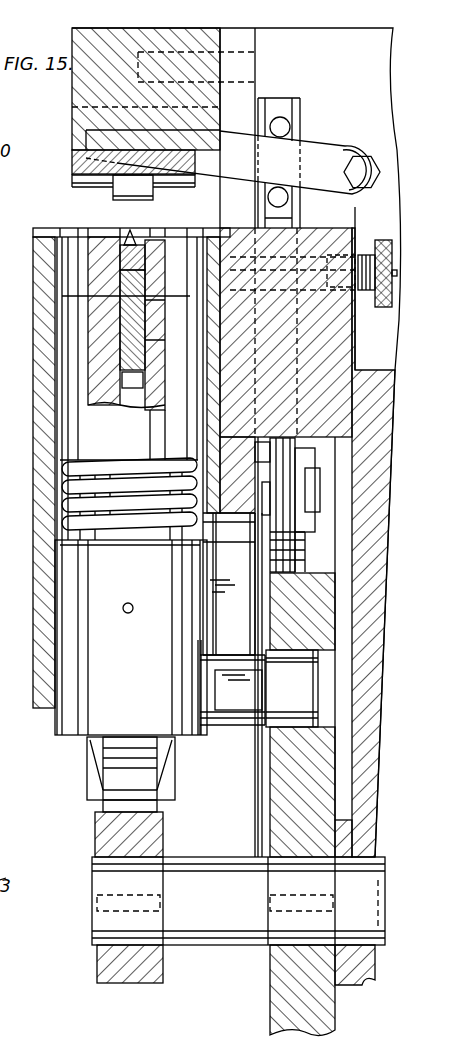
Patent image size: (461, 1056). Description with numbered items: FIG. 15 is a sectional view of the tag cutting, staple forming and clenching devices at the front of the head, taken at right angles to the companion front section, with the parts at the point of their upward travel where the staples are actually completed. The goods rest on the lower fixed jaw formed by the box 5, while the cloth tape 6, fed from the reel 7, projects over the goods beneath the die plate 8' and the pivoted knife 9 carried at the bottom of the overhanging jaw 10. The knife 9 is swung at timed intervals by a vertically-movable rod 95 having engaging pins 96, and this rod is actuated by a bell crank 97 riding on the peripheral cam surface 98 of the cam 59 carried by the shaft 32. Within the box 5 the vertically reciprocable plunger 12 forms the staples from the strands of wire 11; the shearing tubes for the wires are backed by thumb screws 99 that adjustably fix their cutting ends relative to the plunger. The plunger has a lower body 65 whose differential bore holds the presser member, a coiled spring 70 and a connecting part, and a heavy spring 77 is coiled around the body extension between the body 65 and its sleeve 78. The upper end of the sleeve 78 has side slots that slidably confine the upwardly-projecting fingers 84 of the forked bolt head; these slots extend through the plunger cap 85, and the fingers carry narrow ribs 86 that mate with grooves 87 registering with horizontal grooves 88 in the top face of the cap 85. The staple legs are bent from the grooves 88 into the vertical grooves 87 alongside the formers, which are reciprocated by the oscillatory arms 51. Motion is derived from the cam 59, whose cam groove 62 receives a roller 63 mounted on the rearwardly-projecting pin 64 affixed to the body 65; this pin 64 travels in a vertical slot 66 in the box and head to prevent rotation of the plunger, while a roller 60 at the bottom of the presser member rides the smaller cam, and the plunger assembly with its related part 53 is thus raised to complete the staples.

The reel 7 is at (388, 444).
The overhanging jaw 10 is at (82, 133).
The plate 8' is at (121, 169).
The cloth tape 6 is at (133, 187).
The pivoted knife 9 is at (328, 155).
The vertically-movable rod 95 is at (290, 101).
The engaging pins 96 is at (300, 118).
The thumb screws 99 is at (366, 256).
The wire 11 is at (398, 275).
The box 5 is at (152, 268).
The coiled spring 70 is at (86, 228).
The horizontal grooves 88 is at (108, 240).
The grooves 87 is at (131, 230).
The fingers 84 is at (140, 346).
The ribs 86 is at (150, 319).
The plunger cap 85 is at (62, 291).
The sleeve 78 is at (126, 415).
The plunger 12 is at (66, 453).
The heavy spring 77 is at (66, 509).
The lower body 65 is at (131, 637).
The roller 60 is at (87, 790).
The block 53 is at (97, 839).
The shaft 32 is at (238, 946).
The cam 59 is at (278, 815).
The peripheral cam surface 98 is at (328, 575).
The bell crank 97 is at (305, 546).
The vertical slot 66 is at (229, 584).
The cam groove 62 is at (318, 666).
The roller 63 is at (292, 688).
The pin 64 is at (238, 690).
The oscillatory arms 51 is at (0, 248).